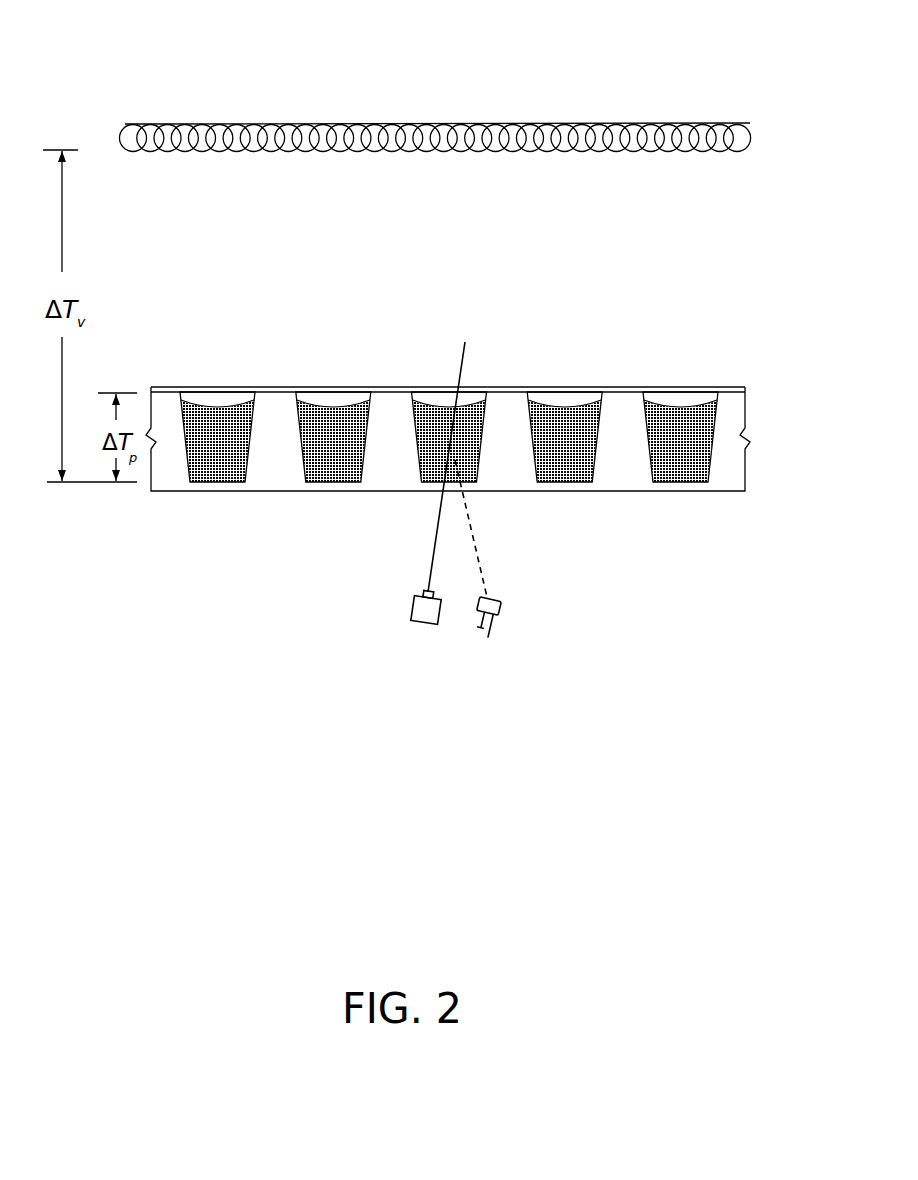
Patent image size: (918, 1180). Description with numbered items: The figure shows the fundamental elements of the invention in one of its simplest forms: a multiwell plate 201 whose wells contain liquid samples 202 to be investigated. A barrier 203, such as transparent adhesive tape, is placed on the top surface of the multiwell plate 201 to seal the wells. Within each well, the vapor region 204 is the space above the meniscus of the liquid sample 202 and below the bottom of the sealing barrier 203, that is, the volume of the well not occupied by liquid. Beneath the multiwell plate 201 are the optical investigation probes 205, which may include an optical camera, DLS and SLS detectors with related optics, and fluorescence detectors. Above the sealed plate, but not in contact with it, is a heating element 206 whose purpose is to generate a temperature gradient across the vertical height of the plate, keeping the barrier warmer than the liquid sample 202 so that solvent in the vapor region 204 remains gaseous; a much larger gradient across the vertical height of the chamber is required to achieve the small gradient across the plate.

The multiwell plate 201 is at (630, 482).
The liquid sample 202 is at (677, 433).
The barrier 203 is at (306, 388).
The vapor region 204 is at (560, 397).
The optical investigation probes 205 is at (452, 620).
The heating element 206 is at (440, 118).